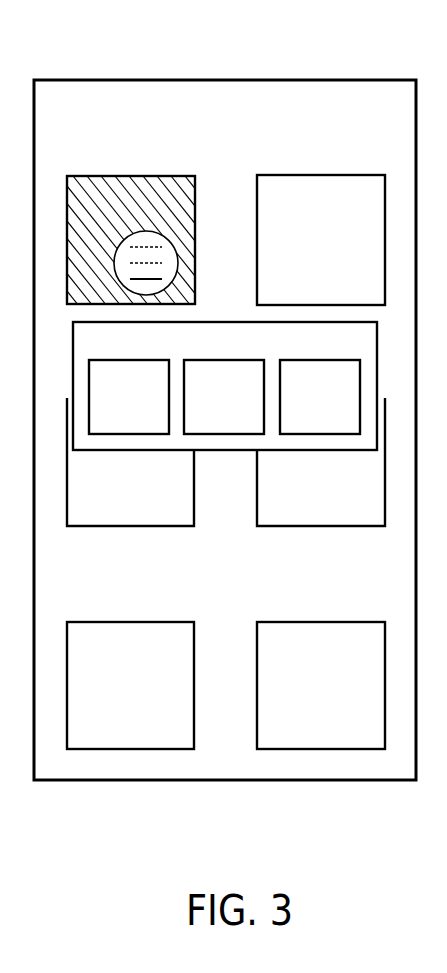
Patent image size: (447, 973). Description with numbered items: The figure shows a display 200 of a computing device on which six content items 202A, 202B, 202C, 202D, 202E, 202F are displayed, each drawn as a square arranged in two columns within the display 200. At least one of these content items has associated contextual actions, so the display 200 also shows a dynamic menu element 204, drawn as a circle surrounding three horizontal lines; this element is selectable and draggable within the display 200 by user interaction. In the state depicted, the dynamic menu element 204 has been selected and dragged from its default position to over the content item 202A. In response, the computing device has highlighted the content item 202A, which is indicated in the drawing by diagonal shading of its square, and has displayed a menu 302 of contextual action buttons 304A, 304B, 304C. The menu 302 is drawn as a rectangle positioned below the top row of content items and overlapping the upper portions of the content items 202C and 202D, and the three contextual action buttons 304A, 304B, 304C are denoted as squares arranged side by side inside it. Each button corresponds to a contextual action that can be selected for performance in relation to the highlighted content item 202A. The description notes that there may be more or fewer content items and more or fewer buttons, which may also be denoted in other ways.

The display 200 is at (220, 781).
The content item 202A is at (136, 214).
The content item 202B is at (317, 209).
The content item 202C is at (125, 517).
The content item 202D is at (318, 517).
The content item 202E is at (124, 656).
The content item 202F is at (314, 656).
The dynamic menu element 204 is at (178, 263).
The menu 302 is at (115, 354).
The contextual action button 304A is at (153, 409).
The contextual action button 304B is at (249, 409).
The contextual action button 304C is at (345, 409).